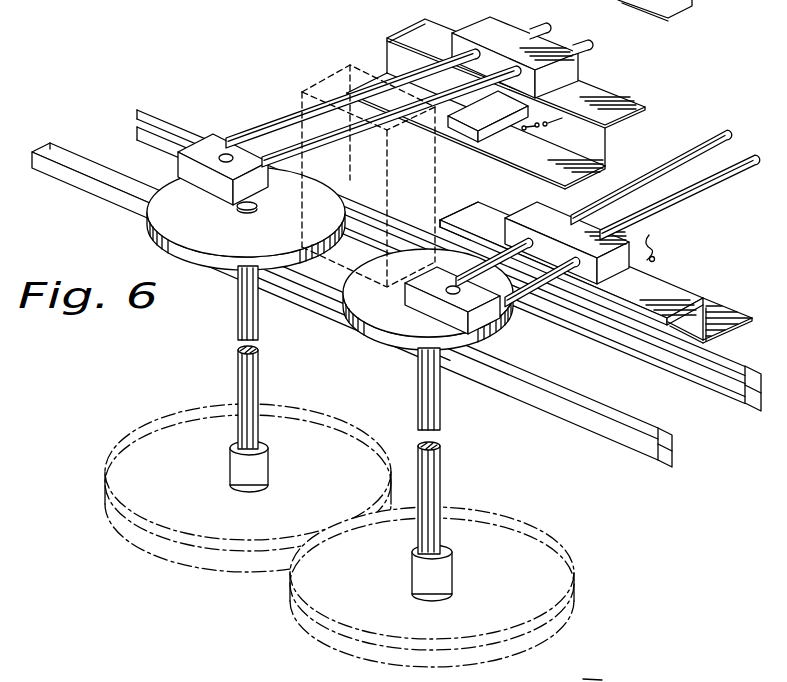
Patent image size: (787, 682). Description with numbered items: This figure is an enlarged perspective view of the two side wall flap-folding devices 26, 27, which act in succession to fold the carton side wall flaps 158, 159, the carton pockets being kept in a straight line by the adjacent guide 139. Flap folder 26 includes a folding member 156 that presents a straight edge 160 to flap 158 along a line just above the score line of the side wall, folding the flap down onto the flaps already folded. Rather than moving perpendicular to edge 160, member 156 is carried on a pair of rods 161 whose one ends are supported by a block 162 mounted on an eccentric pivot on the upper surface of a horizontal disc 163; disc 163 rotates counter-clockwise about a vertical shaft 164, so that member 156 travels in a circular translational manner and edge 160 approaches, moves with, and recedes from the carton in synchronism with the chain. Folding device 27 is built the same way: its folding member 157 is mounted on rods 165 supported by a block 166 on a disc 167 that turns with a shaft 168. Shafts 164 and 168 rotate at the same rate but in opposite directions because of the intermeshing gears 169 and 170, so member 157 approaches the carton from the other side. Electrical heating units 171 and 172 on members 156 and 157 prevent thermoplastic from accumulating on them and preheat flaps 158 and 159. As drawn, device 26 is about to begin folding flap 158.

The side wall flap-folding device 26 is at (598, 78).
The side wall flap-folding device 27 is at (683, 278).
The guide 139 is at (666, 432).
The folding member 156 is at (423, 24).
The folding member 157 is at (466, 214).
The side wall flap 158 is at (352, 64).
The side wall flap 159 is at (306, 91).
The straight edge 160 is at (533, 174).
The rods 161 is at (281, 128).
The block 162 is at (177, 158).
The horizontal disc 163 is at (150, 236).
The vertical shaft 164 is at (240, 366).
The rods 165 is at (737, 157).
The block 166 is at (411, 306).
The disc 167 is at (398, 351).
The shaft 168 is at (442, 452).
The gear 169 is at (200, 560).
The gear 170 is at (302, 625).
The electrical heating unit 171 is at (468, 132).
The electrical heating unit 172 is at (657, 252).